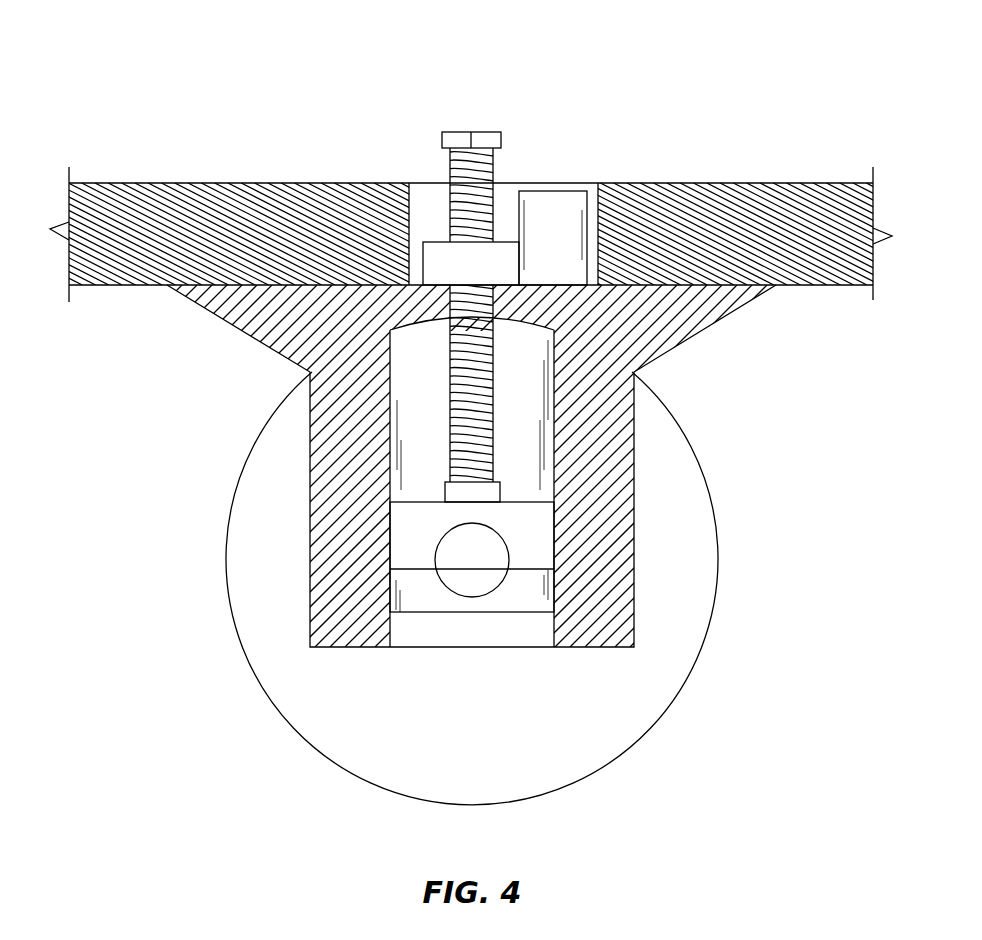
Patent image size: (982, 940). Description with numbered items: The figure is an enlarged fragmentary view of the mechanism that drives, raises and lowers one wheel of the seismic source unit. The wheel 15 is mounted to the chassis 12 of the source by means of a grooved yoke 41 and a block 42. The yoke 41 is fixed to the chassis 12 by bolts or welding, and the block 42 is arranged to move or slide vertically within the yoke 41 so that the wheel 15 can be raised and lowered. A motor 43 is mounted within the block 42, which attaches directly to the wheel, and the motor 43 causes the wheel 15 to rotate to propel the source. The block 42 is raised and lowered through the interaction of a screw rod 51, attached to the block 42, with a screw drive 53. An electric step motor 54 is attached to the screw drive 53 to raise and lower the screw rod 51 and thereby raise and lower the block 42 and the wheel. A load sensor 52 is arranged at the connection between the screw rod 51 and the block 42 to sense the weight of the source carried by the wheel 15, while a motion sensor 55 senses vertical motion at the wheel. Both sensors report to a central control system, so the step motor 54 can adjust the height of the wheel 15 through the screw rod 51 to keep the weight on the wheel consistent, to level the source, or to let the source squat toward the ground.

The chassis 12 is at (733, 183).
The wheel 15 is at (719, 560).
The grooved yoke 41 is at (310, 513).
The block 42 is at (530, 502).
The motor 43 is at (458, 573).
The screw rod 51 is at (452, 370).
The load sensor 52 is at (443, 487).
The screw drive 53 is at (456, 276).
The electric step motor 54 is at (538, 250).
The motion sensor 55 is at (458, 132).